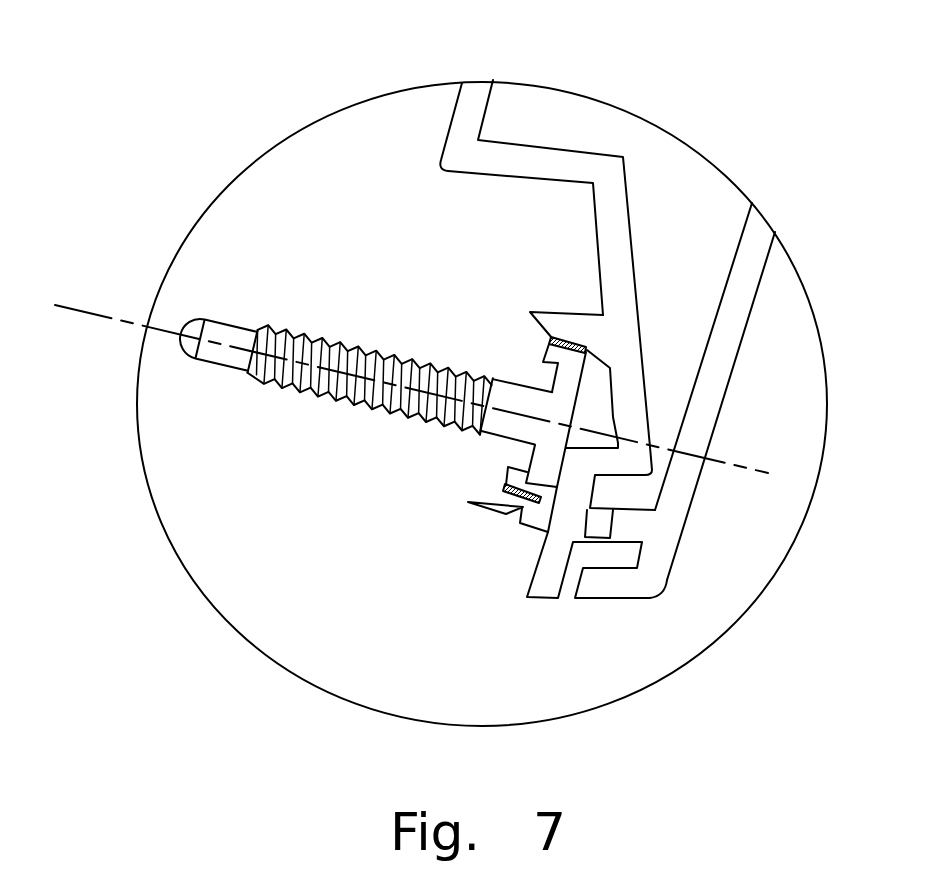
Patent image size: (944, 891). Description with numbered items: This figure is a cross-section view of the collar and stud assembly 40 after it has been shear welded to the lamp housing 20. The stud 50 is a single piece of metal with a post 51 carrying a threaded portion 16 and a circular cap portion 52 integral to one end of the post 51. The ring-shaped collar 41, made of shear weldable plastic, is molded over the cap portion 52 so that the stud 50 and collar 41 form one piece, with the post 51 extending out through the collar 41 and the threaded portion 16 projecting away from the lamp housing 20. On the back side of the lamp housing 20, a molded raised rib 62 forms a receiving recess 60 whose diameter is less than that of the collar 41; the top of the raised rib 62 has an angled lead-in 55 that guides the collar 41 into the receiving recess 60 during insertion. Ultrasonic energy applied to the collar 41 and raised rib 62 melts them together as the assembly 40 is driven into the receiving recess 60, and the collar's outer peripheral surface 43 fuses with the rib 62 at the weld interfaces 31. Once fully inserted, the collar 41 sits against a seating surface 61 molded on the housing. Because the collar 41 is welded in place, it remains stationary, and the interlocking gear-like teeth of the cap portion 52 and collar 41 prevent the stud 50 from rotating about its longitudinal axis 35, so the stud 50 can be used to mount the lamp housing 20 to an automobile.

The lamp housing 20 is at (450, 107).
The seating surface 61 is at (587, 348).
The raised rib 62 is at (576, 322).
The outer peripheral surface 43 is at (583, 335).
The cap portion 52 is at (552, 391).
The receiving recess 60 is at (520, 455).
The stud and collar assembly 40 is at (313, 458).
The stud 50 is at (402, 349).
The threaded portion 16 is at (285, 388).
The post 51 is at (221, 321).
The longitudinal axis 35 is at (85, 312).
The collar 41 is at (504, 476).
The angled lead-in 55 is at (482, 509).
The weld interface 31 is at (518, 508).